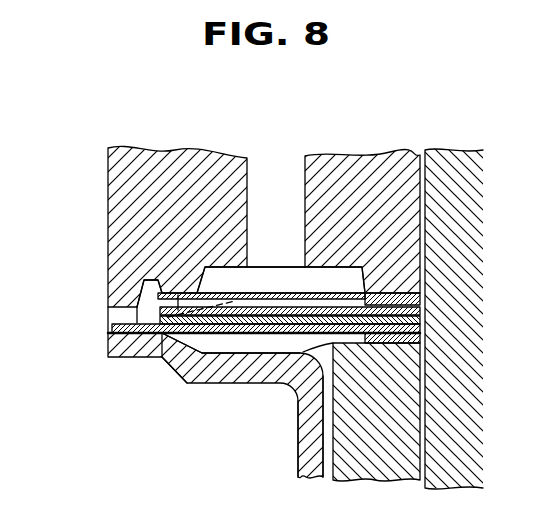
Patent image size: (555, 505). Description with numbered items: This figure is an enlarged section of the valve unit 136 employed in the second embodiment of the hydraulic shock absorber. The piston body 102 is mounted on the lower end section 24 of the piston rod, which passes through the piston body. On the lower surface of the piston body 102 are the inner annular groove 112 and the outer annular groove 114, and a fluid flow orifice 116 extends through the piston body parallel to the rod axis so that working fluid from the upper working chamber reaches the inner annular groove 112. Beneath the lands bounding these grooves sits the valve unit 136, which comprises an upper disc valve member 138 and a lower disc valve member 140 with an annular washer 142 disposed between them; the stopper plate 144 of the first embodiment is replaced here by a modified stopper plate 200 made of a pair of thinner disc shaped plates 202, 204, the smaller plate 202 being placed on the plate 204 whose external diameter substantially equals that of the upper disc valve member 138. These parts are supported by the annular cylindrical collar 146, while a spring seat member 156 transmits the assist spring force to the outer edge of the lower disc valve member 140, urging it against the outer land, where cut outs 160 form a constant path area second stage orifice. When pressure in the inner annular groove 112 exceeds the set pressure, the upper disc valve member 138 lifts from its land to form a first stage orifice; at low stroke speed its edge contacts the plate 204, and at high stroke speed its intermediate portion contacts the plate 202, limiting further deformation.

The lower end section 24 is at (452, 440).
The piston body 102 is at (410, 198).
The inner annular groove 112 is at (210, 272).
The outer annular groove 114 is at (145, 283).
The fluid flow orifice 116 is at (262, 195).
The valve unit 136 is at (161, 356).
The upper disc valve member 138 is at (121, 336).
The lower disc valve member 140 is at (423, 328).
The annular washer 142 is at (423, 301).
The stopper plate 144 is at (300, 353).
The annular cylindrical collar 146 is at (410, 382).
The spring seat member 156 is at (313, 440).
The cut out 160 is at (121, 314).
The stopper plate 200 is at (266, 293).
The plate 202 is at (423, 313).
The plate 204 is at (423, 320).